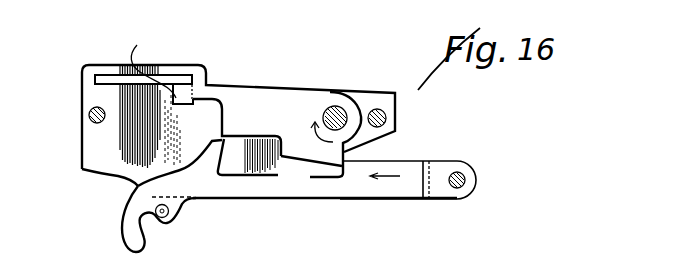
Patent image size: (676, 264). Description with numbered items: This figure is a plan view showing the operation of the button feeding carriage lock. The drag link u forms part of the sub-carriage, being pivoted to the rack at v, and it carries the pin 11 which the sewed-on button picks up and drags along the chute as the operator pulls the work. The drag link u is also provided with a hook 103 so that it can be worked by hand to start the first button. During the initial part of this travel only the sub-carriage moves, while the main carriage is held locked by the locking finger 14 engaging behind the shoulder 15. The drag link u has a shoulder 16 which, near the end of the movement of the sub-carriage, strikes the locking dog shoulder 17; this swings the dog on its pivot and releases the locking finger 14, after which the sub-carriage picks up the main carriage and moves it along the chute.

The shoulder 15 is at (145, 41).
The locking finger 14 is at (178, 97).
The shoulder 16 is at (255, 194).
The locking dog shoulder 17 is at (309, 176).
The pin 11 is at (172, 214).
The hook 103 is at (121, 231).
The drag link u is at (372, 196).
The pivot v is at (466, 180).